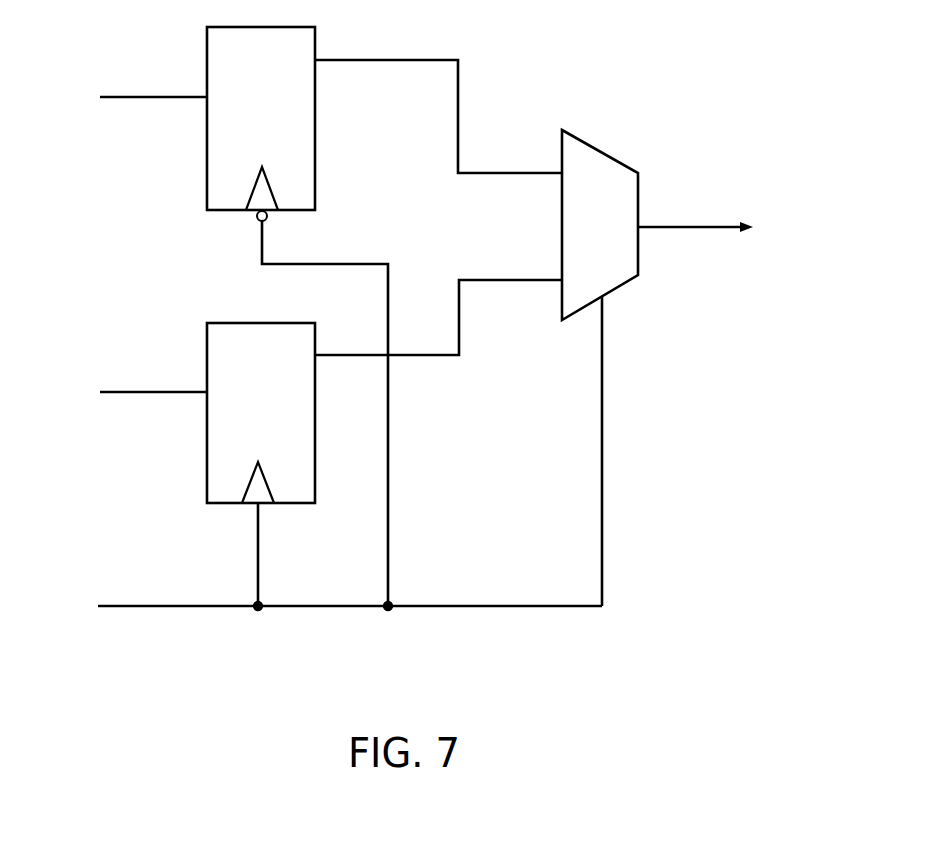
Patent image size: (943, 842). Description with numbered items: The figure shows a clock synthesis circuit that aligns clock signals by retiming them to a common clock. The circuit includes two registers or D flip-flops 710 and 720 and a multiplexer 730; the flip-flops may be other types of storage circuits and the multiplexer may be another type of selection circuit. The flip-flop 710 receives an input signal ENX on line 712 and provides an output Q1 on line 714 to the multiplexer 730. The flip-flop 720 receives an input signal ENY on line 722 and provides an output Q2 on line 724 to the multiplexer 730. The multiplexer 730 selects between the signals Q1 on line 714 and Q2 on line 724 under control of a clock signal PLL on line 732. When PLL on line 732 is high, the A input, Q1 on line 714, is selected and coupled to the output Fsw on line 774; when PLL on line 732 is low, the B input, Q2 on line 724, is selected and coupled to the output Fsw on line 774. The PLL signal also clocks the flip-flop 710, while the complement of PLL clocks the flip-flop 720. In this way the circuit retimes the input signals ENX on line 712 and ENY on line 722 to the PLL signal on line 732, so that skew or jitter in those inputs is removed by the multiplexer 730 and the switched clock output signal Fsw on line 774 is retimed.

The flip-flop 710 is at (316, 176).
The line 712 is at (153, 98).
The line 714 is at (387, 62).
The flip-flop 720 is at (300, 504).
The line 722 is at (153, 393).
The line 724 is at (423, 357).
The multiplexer 730 is at (638, 262).
The line 732 is at (153, 607).
The line 774 is at (703, 227).